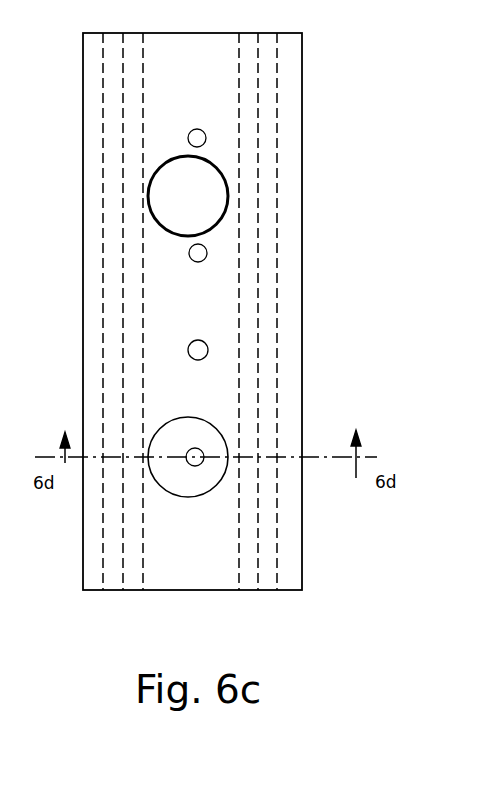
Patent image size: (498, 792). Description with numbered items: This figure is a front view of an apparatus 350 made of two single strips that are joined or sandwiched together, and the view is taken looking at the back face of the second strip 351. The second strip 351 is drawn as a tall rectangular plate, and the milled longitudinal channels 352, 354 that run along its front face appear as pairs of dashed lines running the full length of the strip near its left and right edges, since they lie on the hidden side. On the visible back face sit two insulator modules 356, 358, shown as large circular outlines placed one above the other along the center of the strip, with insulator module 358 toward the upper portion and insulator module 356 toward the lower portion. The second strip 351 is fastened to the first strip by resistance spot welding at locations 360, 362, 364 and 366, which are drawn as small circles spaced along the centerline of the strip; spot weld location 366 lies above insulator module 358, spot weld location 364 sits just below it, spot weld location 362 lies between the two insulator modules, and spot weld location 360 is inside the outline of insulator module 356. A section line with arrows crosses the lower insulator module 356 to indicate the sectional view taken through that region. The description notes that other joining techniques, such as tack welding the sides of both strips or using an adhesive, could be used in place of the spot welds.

The apparatus 350 is at (203, 307).
The second strip 351 is at (208, 72).
The milled longitudinal channel 352 is at (115, 550).
The milled longitudinal channel 354 is at (265, 553).
The insulator module 356 is at (210, 418).
The insulator module 358 is at (223, 200).
The resistance spot welding location 360 is at (201, 463).
The resistance spot welding location 362 is at (206, 347).
The resistance spot welding location 364 is at (208, 248).
The resistance spot welding location 366 is at (205, 134).